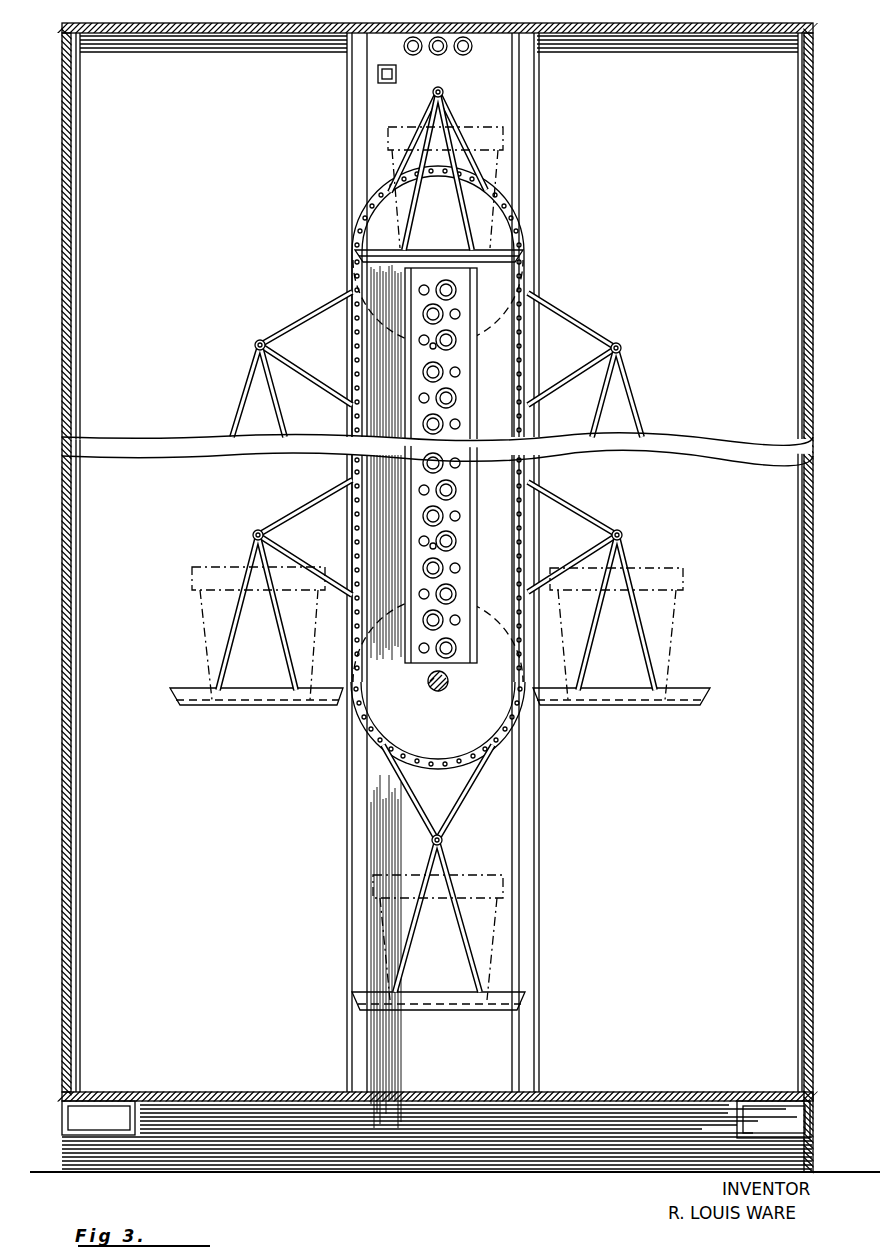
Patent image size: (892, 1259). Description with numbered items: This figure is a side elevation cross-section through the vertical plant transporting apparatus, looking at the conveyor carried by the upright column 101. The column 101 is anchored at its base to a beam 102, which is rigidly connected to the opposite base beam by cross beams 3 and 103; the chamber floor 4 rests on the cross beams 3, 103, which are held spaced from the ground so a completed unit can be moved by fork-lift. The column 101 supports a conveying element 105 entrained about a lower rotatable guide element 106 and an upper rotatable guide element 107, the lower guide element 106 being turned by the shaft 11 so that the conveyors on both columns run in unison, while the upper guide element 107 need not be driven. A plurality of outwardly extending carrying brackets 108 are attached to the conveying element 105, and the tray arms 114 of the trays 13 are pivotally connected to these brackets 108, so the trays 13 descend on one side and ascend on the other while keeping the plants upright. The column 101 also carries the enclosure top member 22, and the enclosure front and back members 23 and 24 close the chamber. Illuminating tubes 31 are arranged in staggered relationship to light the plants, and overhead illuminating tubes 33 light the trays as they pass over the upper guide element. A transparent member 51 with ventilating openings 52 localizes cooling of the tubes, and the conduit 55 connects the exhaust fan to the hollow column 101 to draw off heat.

The cross beam 3 is at (62, 1120).
The chamber floor 4 is at (612, 1092).
The shaft 11 is at (444, 690).
The tray 13 is at (527, 256).
The enclosure top member 22 is at (535, 26).
The enclosure front member 23 is at (62, 896).
The enclosure back member 24 is at (813, 848).
The illuminating tube 31 is at (456, 292).
The illuminating tube 33 is at (440, 37).
The member 51 is at (460, 343).
The ventilating opening 52 is at (460, 375).
The conduit 55 is at (396, 73).
The upright column 101 is at (539, 94).
The beam 102 is at (512, 1160).
The cross beam 103 is at (810, 1118).
The conveying element 105 is at (527, 206).
The rotatable guide element 106 is at (368, 712).
The rotatable guide element 107 is at (507, 284).
The carrying bracket 108 is at (326, 312).
The tray arm 114 is at (240, 406).